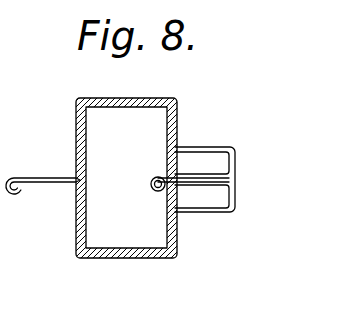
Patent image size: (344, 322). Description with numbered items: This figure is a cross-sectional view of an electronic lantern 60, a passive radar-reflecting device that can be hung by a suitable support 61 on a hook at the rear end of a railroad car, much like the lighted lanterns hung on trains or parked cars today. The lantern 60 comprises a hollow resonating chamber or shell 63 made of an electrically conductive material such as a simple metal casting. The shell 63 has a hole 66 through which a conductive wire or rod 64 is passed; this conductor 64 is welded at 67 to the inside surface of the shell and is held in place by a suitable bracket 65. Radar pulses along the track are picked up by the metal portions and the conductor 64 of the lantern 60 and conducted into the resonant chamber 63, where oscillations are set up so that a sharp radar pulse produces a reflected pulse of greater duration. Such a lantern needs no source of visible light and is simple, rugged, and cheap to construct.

The electronic lantern 60 is at (179, 244).
The support 61 is at (45, 177).
The hollow resonating chamber or shell 63 is at (177, 121).
The conductive wire or rod 64 is at (195, 177).
The bracket 65 is at (220, 212).
The hole 66 is at (174, 185).
The weld 67 is at (155, 197).